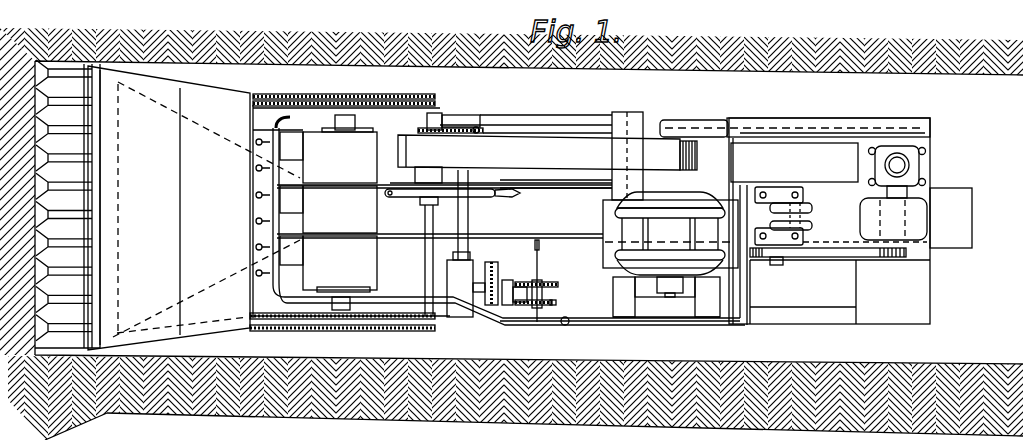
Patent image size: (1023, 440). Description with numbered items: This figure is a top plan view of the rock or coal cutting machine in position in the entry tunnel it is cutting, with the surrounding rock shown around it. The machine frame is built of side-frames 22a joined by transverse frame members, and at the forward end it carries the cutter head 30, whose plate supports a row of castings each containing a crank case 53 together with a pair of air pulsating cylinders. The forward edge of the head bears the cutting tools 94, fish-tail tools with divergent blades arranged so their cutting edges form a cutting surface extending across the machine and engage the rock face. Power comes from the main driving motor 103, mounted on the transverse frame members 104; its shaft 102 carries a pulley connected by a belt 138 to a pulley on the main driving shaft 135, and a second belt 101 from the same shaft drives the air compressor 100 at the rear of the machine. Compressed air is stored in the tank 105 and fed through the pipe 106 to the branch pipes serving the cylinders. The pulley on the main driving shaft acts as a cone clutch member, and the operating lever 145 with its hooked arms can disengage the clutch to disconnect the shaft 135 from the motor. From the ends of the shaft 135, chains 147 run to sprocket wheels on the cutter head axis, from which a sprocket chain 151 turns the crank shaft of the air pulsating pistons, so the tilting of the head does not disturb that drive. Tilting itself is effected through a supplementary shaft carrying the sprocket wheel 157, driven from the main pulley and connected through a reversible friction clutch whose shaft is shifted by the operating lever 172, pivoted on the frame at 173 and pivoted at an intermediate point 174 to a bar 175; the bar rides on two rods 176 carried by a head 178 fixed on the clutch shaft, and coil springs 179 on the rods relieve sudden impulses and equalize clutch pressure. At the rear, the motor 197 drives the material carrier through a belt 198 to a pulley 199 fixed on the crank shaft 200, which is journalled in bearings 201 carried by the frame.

The cutter head 30 is at (194, 208).
The crank case 53 is at (328, 211).
The cutting tool 94 is at (70, 333).
The air compressor 100 is at (912, 153).
The belt 101 is at (835, 125).
The shaft 102 is at (674, 120).
The main driving motor 103 is at (627, 242).
The transverse frame members 104 is at (703, 292).
The tank 105 is at (800, 167).
The pipe 106 is at (745, 328).
The main driving shaft 135 is at (428, 220).
The belt 138 is at (547, 156).
The operating lever 145 is at (490, 200).
The chain 147 is at (400, 100).
The sprocket chain 151 is at (310, 105).
The sprocket wheel 157 is at (483, 128).
The operating lever 172 is at (523, 281).
The pivot 173 is at (535, 307).
The intermediate pivot 174 is at (553, 283).
The bar 175 is at (538, 280).
The rods 176 is at (513, 295).
The head 178 is at (513, 307).
The coil springs 179 is at (528, 307).
The motor 197 is at (915, 230).
The belt 198 is at (828, 258).
The pulley 199 is at (778, 266).
The crank shaft 200 is at (808, 208).
The bearings 201 is at (808, 226).
The side-frames 22a is at (805, 313).